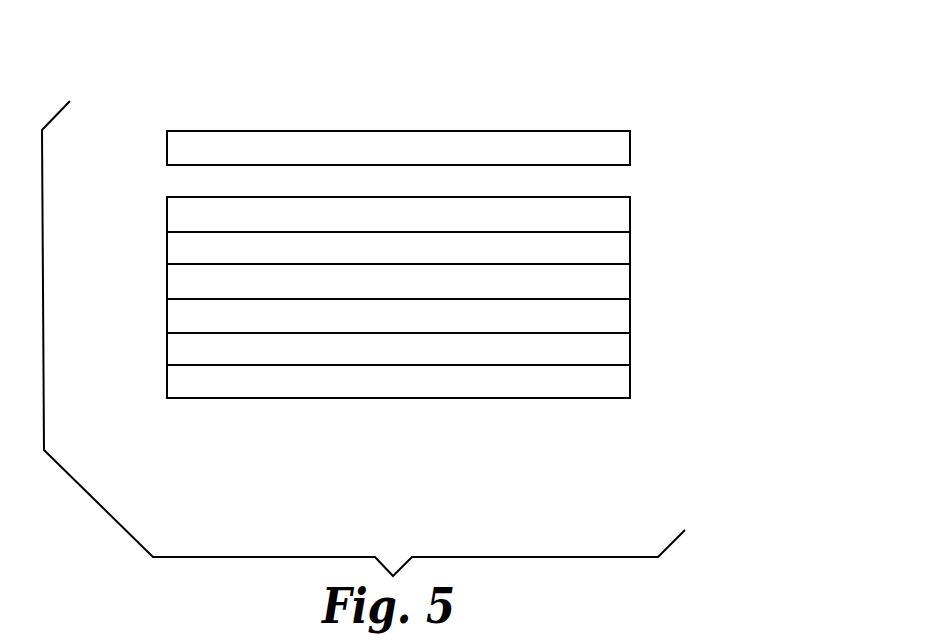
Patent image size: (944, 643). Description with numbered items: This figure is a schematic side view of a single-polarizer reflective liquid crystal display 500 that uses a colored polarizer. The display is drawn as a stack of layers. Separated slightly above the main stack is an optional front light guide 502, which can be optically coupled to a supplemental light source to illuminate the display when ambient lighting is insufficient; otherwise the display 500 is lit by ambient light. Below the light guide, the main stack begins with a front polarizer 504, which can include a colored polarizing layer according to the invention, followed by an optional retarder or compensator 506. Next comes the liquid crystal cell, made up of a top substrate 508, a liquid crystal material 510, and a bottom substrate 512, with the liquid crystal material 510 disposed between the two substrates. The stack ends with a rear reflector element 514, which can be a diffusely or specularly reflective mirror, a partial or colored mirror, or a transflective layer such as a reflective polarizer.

The single-polarizer reflective liquid crystal display 500 is at (570, 78).
The front light guide 502 is at (620, 149).
The front polarizer 504 is at (620, 214).
The retarder or compensator 506 is at (620, 248).
The top substrate 508 is at (176, 283).
The liquid crystal material 510 is at (178, 320).
The bottom substrate 512 is at (177, 351).
The rear reflector element 514 is at (619, 383).